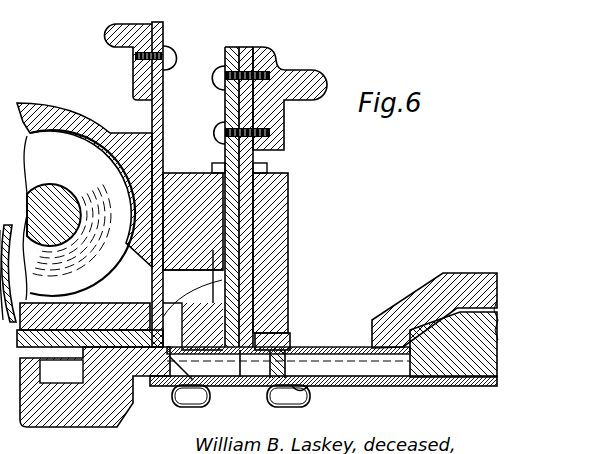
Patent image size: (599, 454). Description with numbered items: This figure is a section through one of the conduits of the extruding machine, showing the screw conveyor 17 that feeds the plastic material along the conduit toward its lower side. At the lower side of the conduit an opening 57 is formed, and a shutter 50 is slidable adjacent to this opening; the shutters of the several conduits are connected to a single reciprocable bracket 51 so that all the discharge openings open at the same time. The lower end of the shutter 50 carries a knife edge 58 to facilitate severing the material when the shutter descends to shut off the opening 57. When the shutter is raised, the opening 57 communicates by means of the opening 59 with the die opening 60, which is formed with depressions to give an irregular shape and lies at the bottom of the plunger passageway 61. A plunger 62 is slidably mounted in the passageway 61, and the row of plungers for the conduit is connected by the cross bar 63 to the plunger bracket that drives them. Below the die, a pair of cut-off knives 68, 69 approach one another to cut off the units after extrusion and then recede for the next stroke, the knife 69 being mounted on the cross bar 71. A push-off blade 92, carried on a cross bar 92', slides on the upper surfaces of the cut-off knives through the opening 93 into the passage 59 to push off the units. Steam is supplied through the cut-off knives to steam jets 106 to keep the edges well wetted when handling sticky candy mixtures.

The screw conveyor 17 is at (95, 121).
The shutter 50 is at (164, 146).
The bracket 51 is at (105, 35).
The opening 57 is at (111, 272).
The knife edge 58 is at (262, 292).
The opening 59 is at (197, 277).
The die opening 60 is at (293, 333).
The plunger passageway 61 is at (256, 210).
The plunger 62 is at (268, 168).
The cross bar 63 is at (302, 76).
The cut-off knife 68 is at (133, 423).
The cut-off knife 69 is at (254, 389).
The cross bar 71 is at (445, 340).
The push-off blade 92 is at (288, 339).
The cross bar 92' is at (434, 305).
The opening 93 is at (186, 386).
The steam jet 106 is at (302, 391).